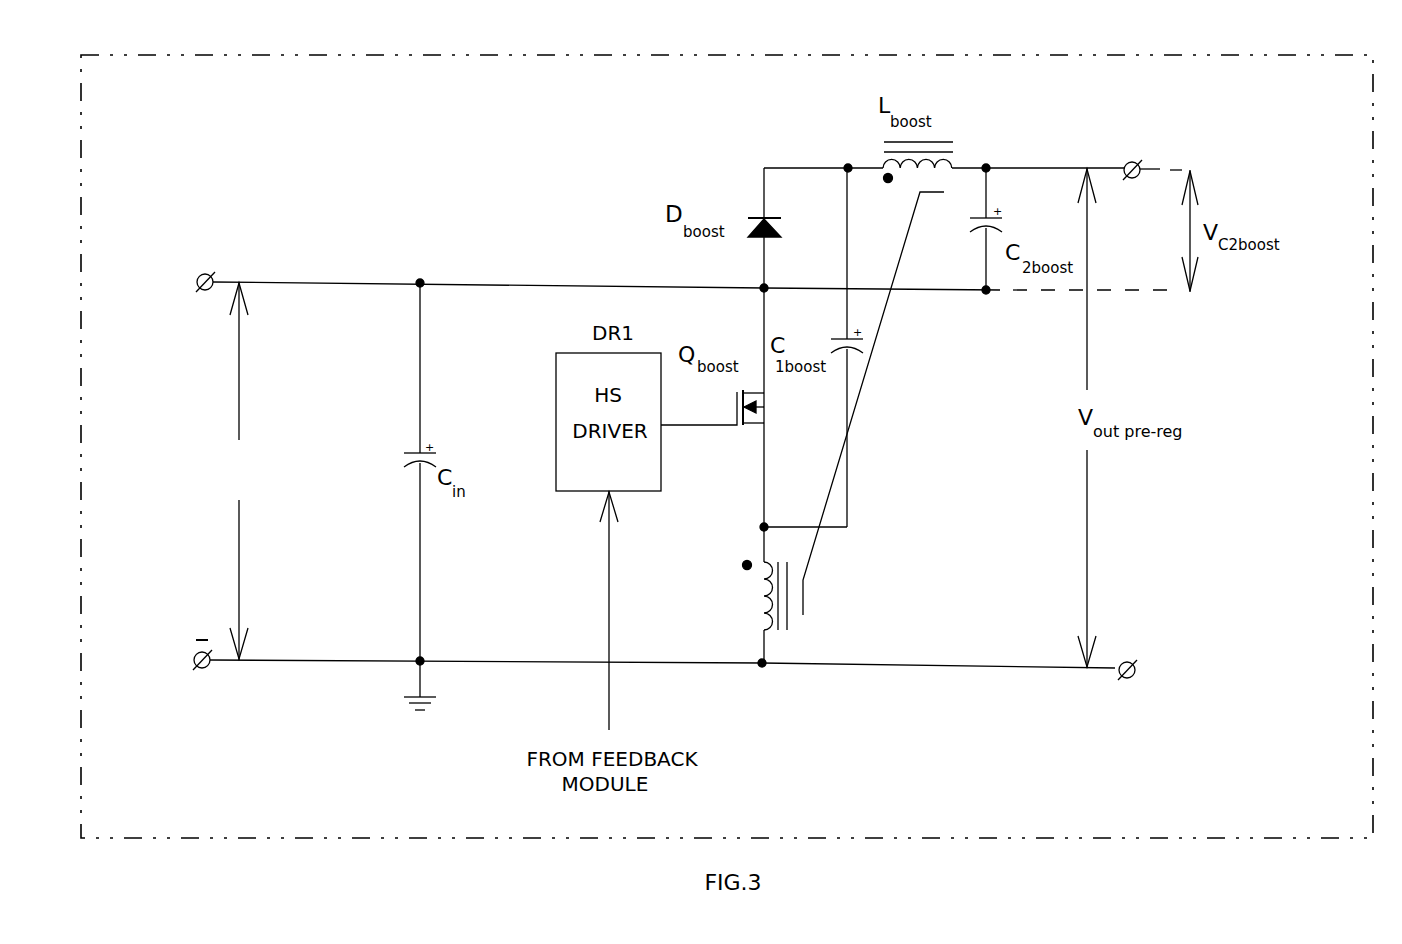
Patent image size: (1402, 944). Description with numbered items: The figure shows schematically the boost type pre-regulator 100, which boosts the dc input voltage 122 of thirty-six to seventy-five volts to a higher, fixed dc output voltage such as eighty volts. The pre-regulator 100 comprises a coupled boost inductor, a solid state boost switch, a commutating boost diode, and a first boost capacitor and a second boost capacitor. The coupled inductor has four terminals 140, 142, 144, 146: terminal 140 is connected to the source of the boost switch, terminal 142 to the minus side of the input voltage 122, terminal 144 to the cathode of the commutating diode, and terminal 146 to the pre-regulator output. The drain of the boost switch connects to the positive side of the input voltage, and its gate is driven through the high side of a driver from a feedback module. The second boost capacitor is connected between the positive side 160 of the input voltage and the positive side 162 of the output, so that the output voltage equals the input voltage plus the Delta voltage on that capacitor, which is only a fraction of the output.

The pre-regulator 100 is at (727, 446).
The dc input voltage Vin 122 is at (275, 456).
The terminal of inductor Lboost 140 is at (772, 526).
The terminal of inductor Lboost 142 is at (750, 614).
The terminal of inductor Lboost 144 is at (823, 146).
The terminal of inductor Lboost 146 is at (1038, 147).
The positive side of the input voltage 160 is at (1004, 311).
The positive side of the pre-regulator output voltage 162 is at (1149, 151).